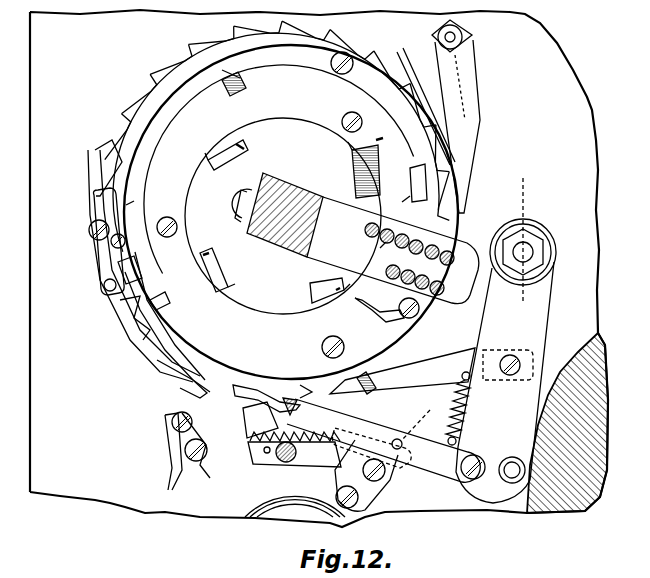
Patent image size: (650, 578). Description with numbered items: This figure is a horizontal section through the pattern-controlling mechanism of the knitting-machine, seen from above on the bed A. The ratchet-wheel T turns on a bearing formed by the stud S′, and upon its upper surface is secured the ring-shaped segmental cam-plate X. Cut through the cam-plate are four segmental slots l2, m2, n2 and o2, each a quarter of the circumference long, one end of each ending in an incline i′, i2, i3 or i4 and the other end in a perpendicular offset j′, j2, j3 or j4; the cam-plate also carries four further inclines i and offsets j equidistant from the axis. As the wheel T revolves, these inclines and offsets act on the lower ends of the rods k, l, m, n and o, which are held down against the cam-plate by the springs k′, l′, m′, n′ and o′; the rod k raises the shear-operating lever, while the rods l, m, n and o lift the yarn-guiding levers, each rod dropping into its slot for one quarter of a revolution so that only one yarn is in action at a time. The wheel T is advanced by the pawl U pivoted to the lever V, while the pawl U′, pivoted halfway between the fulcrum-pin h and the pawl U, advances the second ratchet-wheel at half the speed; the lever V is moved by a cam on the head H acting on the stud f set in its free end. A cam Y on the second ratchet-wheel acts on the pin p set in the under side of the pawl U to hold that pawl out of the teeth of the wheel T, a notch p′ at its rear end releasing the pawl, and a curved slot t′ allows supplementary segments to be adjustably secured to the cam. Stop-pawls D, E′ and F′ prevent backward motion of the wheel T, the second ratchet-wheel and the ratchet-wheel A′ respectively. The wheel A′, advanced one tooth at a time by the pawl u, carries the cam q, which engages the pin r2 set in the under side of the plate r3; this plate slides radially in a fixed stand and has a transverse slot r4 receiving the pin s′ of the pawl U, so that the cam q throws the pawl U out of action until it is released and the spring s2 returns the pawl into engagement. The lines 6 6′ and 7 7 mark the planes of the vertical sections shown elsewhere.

The bed A is at (287, 277).
The ratchet-wheel A′ is at (229, 498).
The stop-pawl D is at (456, 116).
The stop-pawl E′ is at (426, 106).
The stop-pawl F′ is at (186, 467).
The head H is at (575, 423).
The bearing stud S′ is at (277, 207).
The ratchet-wheel T is at (265, 231).
The pawl U is at (383, 440).
The pawl U′ is at (402, 371).
The lever V is at (505, 382).
The segmental cam-plate X is at (281, 200).
The cam Y is at (165, 322).
The fulcrum-pin h is at (523, 252).
The stud f is at (512, 470).
The incline i is at (288, 219).
The incline i′ is at (386, 150).
The incline i2 is at (158, 300).
The incline i3 is at (364, 382).
The incline i4 is at (235, 84).
The offset j is at (277, 220).
The perpendicular offset j′ is at (379, 310).
The perpendicular offset j2 is at (225, 75).
The perpendicular offset j3 is at (130, 273).
The perpendicular offset j4 is at (418, 183).
The rod k is at (393, 250).
The spring k′ is at (447, 254).
The rod l is at (391, 229).
The spring l′ is at (375, 250).
The segmental slot l2 is at (404, 196).
The rod m is at (411, 235).
The spring m′ is at (430, 241).
The segmental slot m2 is at (135, 209).
The rod n is at (443, 289).
The spring n′ is at (426, 276).
The segmental slot n2 is at (266, 396).
The rod o is at (407, 284).
The spring o′ is at (389, 268).
The segmental slot o2 is at (279, 169).
The pin p is at (302, 400).
The notch p′ is at (188, 385).
The cam q is at (294, 449).
The pin r2 is at (358, 480).
The plate r3 is at (360, 483).
The transverse slot r4 is at (385, 445).
The pin s′ is at (379, 443).
The spring s2 is at (462, 430).
The curved slot t′ is at (108, 255).
The pawl u is at (260, 420).
The section line 6 is at (418, 417).
The section line end 6′ is at (333, 523).
The section line 7 is at (522, 239).